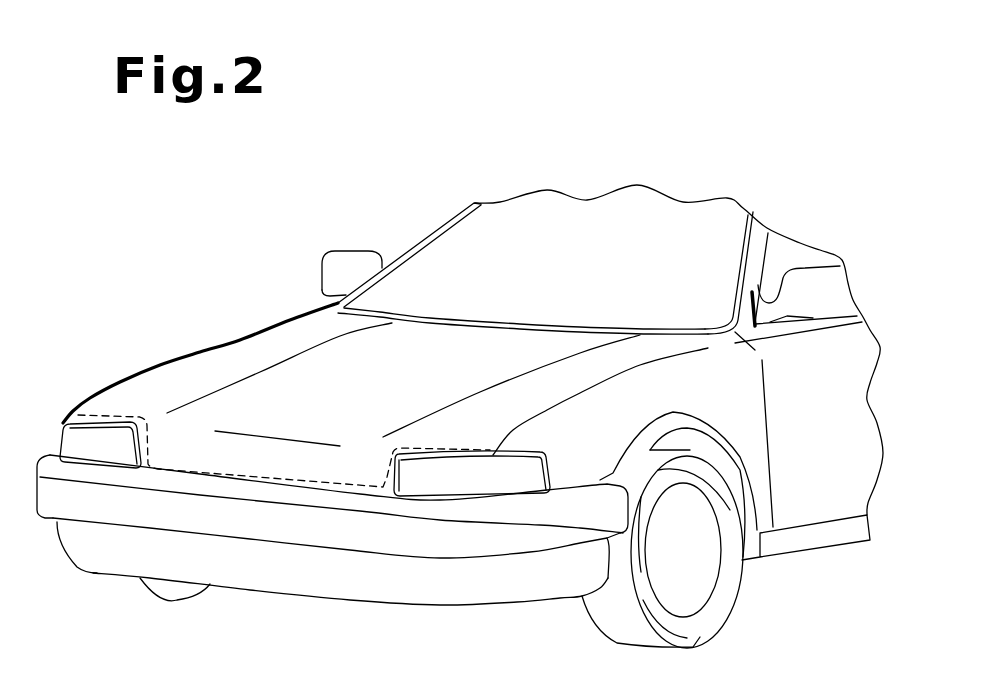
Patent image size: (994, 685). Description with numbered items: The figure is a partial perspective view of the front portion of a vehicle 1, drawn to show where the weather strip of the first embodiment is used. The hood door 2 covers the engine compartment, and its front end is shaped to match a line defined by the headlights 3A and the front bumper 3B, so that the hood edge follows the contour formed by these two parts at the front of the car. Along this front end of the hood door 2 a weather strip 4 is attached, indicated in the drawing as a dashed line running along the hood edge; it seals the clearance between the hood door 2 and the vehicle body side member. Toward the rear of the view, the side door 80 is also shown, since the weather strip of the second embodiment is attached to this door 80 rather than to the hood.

The vehicle body 1 is at (571, 182).
The hood door 2 is at (260, 350).
The headlights 3A is at (73, 439).
The front bumper 3B is at (305, 530).
The weather strip 4 is at (250, 477).
The door 80 is at (812, 507).